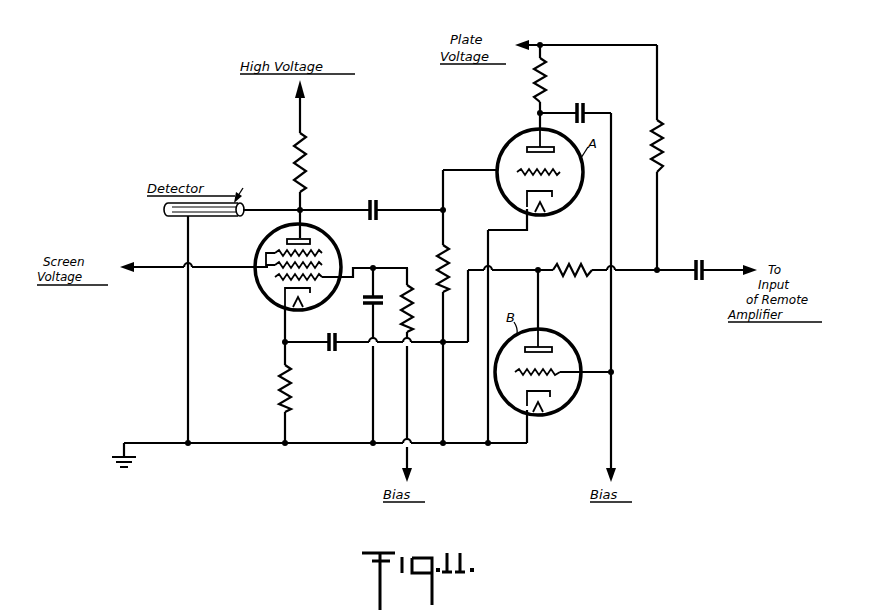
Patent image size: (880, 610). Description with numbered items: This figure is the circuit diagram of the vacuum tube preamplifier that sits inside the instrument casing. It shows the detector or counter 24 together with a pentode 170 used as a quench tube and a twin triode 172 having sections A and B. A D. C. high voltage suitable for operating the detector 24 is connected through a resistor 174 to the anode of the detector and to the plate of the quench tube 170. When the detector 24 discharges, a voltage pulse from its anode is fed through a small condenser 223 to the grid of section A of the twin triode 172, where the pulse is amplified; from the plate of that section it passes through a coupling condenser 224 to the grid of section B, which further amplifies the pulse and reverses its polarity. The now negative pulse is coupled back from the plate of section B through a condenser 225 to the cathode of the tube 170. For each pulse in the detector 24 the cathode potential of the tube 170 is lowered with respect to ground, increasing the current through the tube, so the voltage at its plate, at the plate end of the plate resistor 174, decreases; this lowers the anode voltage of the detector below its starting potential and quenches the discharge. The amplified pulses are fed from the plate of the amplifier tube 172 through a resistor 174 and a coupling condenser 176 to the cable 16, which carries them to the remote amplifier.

The resistor 174 is at (296, 163).
The detector 24 is at (168, 209).
The pentode 170 is at (258, 248).
The small condenser 223 is at (380, 190).
The condenser 225 is at (336, 352).
The twin triode 172 is at (514, 138).
The coupling condenser 224 is at (587, 108).
The coupling condenser 176 is at (700, 259).
The cable 16 is at (722, 275).